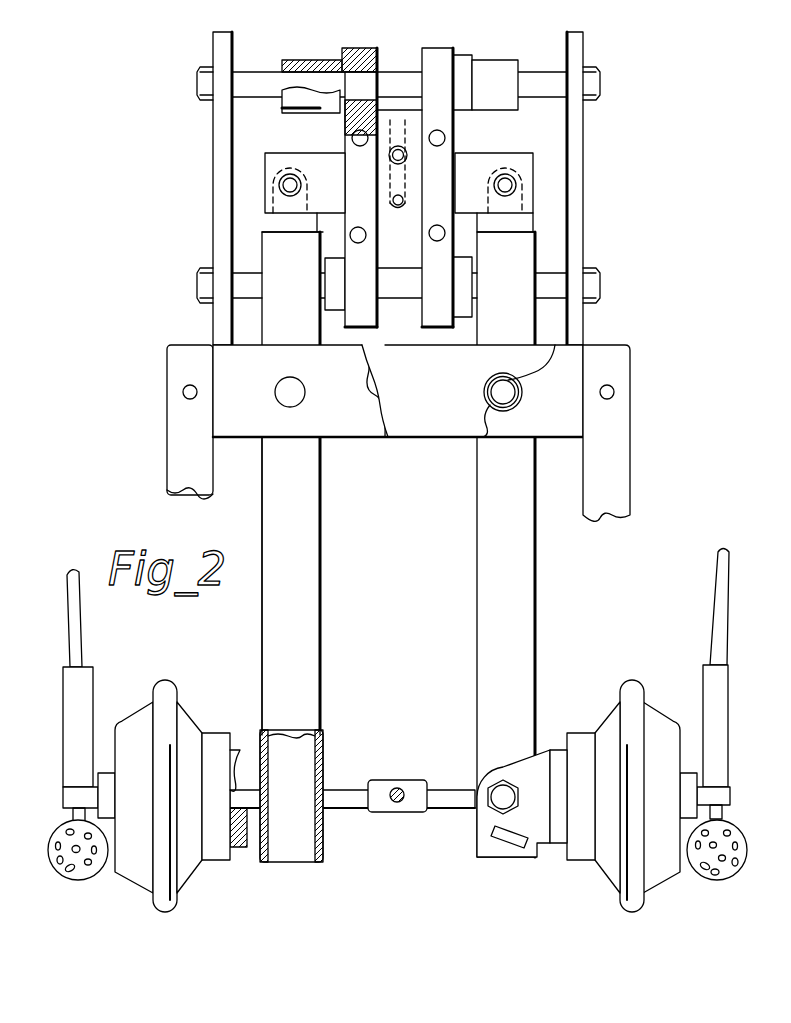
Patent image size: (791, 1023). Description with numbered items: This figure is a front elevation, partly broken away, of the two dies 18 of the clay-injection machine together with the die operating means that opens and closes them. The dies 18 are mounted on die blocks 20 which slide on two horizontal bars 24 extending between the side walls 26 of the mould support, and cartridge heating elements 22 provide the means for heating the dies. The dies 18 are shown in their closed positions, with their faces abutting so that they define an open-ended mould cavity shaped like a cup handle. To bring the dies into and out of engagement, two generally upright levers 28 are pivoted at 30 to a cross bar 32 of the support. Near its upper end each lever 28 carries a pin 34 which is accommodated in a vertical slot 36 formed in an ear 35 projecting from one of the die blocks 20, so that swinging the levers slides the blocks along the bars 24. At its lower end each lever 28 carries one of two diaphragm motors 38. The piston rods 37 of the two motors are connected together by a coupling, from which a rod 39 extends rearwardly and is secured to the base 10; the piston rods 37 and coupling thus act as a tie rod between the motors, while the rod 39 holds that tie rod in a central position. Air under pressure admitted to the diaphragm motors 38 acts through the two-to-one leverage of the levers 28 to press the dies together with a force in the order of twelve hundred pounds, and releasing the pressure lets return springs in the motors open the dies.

The base 10 is at (630, 475).
The dies 18 is at (388, 114).
The die blocks 20 is at (363, 47).
The cartridge heating elements 22 is at (445, 137).
The horizontal bars 24 is at (260, 75).
The side walls 26 is at (213, 177).
The upright levers 28 is at (302, 618).
The pivot 30 is at (278, 394).
The cross bar 32 is at (445, 439).
The pin 34 is at (287, 190).
The ear 35 is at (313, 160).
The vertical slot 36 is at (288, 172).
The piston rods 37 is at (350, 801).
The diaphragm motors 38 is at (165, 690).
The rod 39 is at (397, 787).